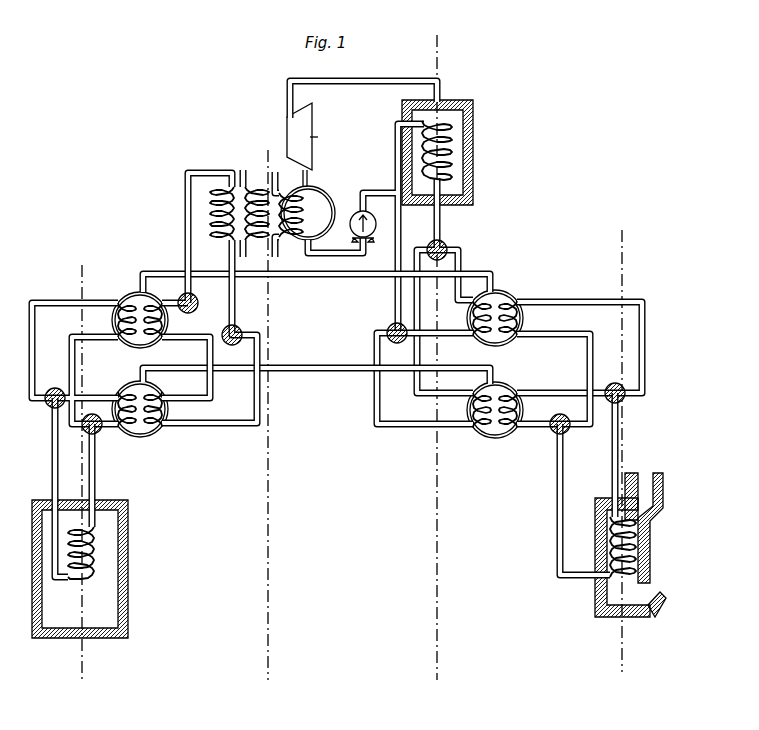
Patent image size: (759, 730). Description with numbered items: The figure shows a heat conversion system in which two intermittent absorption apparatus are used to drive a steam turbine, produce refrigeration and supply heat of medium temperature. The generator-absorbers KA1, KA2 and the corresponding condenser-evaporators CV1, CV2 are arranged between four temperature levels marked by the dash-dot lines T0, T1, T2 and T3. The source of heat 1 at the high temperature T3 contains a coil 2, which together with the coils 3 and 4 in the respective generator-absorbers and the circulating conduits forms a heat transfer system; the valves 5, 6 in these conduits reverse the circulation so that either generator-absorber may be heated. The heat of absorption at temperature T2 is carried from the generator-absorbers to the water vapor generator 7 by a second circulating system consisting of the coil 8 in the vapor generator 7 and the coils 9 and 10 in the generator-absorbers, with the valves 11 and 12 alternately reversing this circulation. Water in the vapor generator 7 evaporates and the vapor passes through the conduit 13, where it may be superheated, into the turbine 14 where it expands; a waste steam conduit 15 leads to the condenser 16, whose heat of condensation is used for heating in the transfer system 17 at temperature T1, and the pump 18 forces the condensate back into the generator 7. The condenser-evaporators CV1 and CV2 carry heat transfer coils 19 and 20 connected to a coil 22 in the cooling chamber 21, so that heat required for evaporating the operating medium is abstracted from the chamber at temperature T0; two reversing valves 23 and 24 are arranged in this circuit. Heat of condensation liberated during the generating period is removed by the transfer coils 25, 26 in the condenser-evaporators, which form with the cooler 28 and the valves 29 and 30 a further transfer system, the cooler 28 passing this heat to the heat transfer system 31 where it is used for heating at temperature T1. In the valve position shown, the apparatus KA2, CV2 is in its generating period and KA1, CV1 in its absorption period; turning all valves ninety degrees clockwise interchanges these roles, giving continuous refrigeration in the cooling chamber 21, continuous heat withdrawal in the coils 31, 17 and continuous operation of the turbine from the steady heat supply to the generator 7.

The source of heat 1 is at (596, 612).
The coil 2 is at (610, 548).
The coil 3 is at (510, 428).
The coil 4 is at (517, 298).
The valve 5 is at (567, 431).
The valve 6 is at (622, 400).
The water vapor generator 7 is at (477, 147).
The coil 8 is at (451, 127).
The coil 9 is at (478, 299).
The coil 10 is at (488, 431).
The valve 11 is at (446, 251).
The valve 12 is at (391, 329).
The conduit 13 is at (384, 85).
The turbine 14 is at (308, 153).
The waste steam conduit 15 is at (308, 177).
The condenser 16 is at (331, 197).
The transfer system 17 is at (289, 232).
The pump 18 is at (365, 239).
The heat transfer coil 19 is at (121, 296).
The heat transfer coil 20 is at (127, 391).
The cooling chamber 21 is at (128, 573).
The coil 22 is at (92, 558).
The reversing valve 23 is at (52, 408).
The reversing valve 24 is at (98, 433).
The transfer coil 25 is at (154, 328).
The transfer coil 26 is at (153, 426).
The cooler 28 is at (211, 212).
The valve 29 is at (186, 294).
The valve 30 is at (239, 328).
The heat transfer system 31 is at (257, 180).
The condenser-evaporator CV1 is at (150, 437).
The condenser-evaporator CV2 is at (127, 292).
The generator-absorber KA1 is at (495, 438).
The generator-absorber KA2 is at (503, 292).
The temperature T0 is at (78, 487).
The temperature T1 is at (263, 430).
The temperature T2 is at (433, 372).
The temperature T3 is at (618, 470).